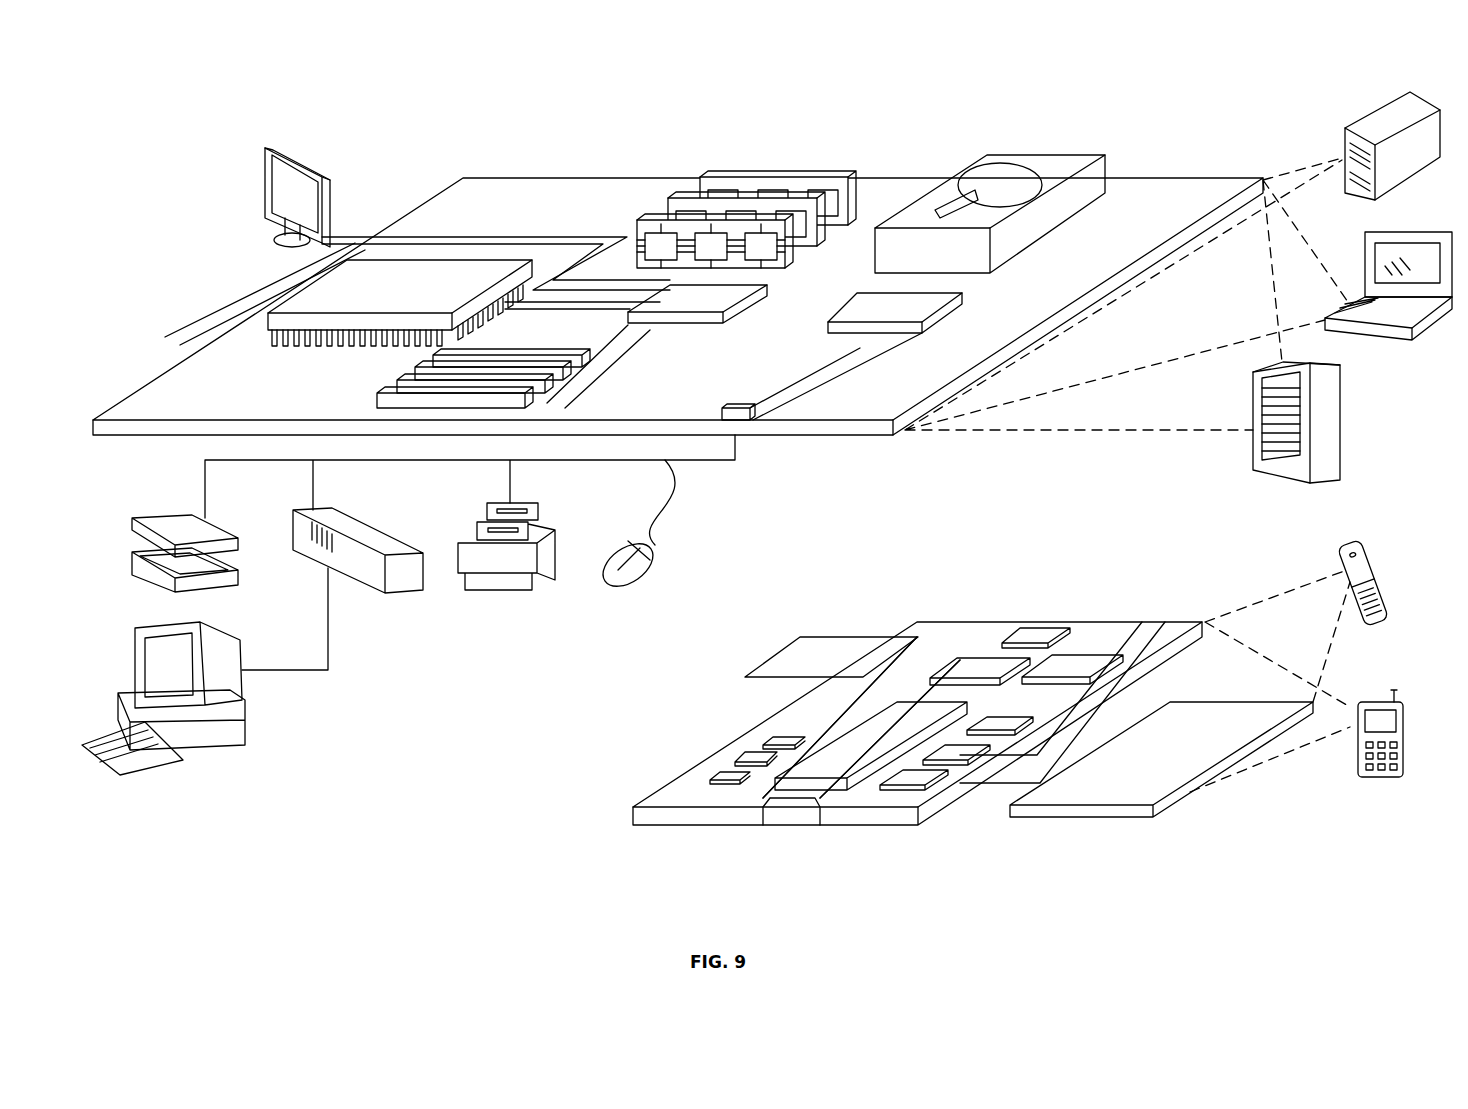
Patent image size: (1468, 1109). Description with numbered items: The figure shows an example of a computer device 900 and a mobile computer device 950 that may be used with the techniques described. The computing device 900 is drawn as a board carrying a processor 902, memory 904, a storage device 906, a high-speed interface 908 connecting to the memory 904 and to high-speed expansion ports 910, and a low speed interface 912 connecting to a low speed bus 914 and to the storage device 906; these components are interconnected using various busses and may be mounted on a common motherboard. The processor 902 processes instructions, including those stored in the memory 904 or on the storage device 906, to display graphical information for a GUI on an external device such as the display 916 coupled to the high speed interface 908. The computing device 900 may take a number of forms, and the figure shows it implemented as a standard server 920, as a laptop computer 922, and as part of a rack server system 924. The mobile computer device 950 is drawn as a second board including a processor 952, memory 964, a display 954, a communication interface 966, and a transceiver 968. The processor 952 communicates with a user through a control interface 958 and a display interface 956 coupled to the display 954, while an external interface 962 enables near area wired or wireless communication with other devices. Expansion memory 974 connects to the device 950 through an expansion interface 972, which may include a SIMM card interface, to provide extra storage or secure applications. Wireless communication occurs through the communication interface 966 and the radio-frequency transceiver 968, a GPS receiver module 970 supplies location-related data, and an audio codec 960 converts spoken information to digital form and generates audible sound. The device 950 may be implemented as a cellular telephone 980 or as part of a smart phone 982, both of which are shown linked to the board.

The computing device 900 is at (408, 118).
The processor 902 is at (298, 295).
The memory 904 is at (784, 174).
The storage device 906 is at (1036, 155).
The high-speed interface 908 is at (710, 305).
The high-speed expansion ports 910 is at (404, 380).
The low speed interface 912 is at (868, 307).
The low speed bus 914 is at (745, 407).
The display 916 is at (272, 148).
The standard server 920 is at (1370, 122).
The laptop computer 922 is at (1428, 232).
The rack server system 924 is at (1340, 420).
The mobile computer device 950 is at (583, 832).
The processor 952 is at (834, 754).
The display 954 is at (1205, 718).
The display interface 956 is at (925, 783).
The control interface 958 is at (965, 752).
The audio codec 960 is at (1003, 718).
The external interface 962 is at (795, 808).
The memory 964 is at (742, 760).
The communication interface 966 is at (980, 660).
The transceiver 968 is at (1080, 660).
The GPS receiver module 970 is at (1037, 630).
The expansion interface 972 is at (898, 637).
The expansion memory 974 is at (809, 637).
The cellular telephone 980 is at (1362, 543).
The smart phone 982 is at (1376, 702).